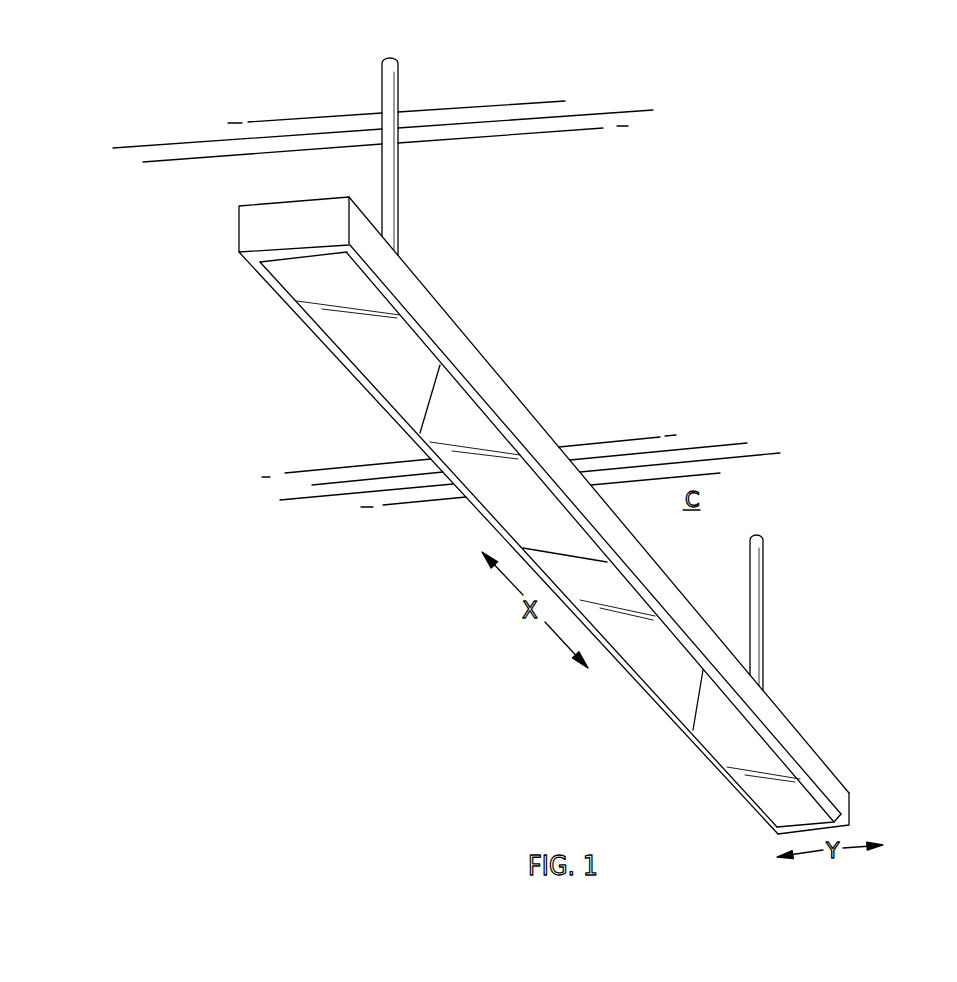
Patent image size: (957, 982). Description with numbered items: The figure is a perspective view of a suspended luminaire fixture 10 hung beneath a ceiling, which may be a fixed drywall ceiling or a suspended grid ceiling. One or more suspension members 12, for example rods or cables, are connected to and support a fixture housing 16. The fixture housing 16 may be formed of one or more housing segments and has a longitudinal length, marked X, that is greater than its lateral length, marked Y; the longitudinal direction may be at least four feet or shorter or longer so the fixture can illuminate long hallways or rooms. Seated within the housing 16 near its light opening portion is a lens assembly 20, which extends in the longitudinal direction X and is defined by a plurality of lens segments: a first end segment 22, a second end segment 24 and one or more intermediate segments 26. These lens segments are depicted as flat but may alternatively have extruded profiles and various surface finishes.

The suspended luminaire fixture 10 is at (564, 446).
The suspension members 12 is at (399, 165).
The fixture housing 16 is at (517, 409).
The lens assembly 20 is at (375, 363).
The first end segment 22 is at (315, 285).
The second end segment 24 is at (800, 813).
The intermediate segments 26 is at (523, 482).